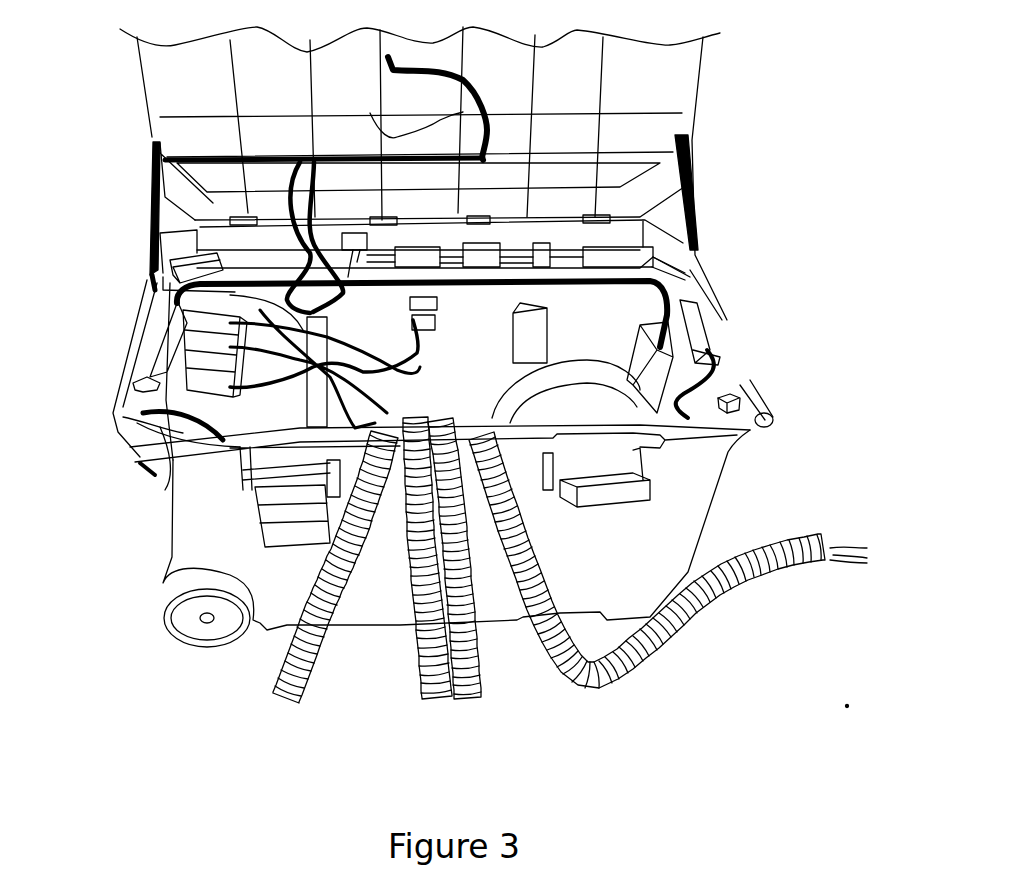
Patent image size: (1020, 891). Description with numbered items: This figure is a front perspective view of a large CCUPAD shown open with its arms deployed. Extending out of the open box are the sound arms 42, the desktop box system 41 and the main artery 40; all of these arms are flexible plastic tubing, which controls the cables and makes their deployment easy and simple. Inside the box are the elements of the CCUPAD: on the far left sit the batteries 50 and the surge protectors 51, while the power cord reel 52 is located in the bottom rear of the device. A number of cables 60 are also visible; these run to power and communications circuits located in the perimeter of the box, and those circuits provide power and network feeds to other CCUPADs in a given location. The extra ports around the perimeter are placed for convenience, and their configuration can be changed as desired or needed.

The main artery 40 is at (417, 677).
The desktop box system 41 is at (477, 673).
The sound arms 42 is at (273, 673).
The batteries 50 is at (183, 407).
The surge protectors 51 is at (163, 298).
The power cord reel 52 is at (573, 370).
The cables 60 is at (778, 337).